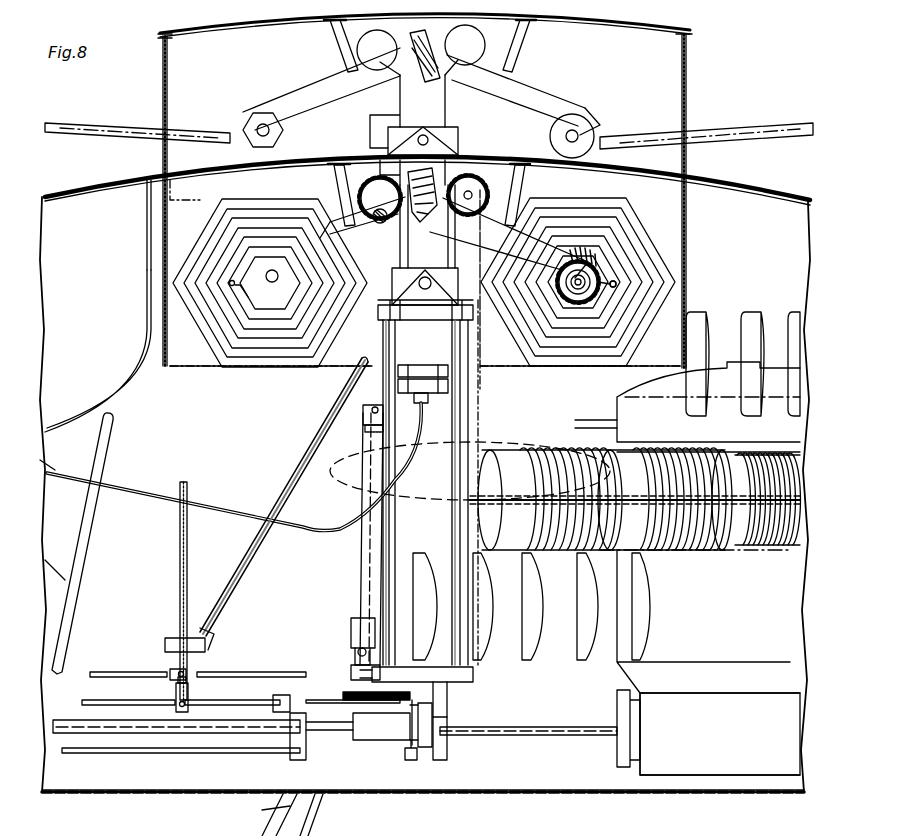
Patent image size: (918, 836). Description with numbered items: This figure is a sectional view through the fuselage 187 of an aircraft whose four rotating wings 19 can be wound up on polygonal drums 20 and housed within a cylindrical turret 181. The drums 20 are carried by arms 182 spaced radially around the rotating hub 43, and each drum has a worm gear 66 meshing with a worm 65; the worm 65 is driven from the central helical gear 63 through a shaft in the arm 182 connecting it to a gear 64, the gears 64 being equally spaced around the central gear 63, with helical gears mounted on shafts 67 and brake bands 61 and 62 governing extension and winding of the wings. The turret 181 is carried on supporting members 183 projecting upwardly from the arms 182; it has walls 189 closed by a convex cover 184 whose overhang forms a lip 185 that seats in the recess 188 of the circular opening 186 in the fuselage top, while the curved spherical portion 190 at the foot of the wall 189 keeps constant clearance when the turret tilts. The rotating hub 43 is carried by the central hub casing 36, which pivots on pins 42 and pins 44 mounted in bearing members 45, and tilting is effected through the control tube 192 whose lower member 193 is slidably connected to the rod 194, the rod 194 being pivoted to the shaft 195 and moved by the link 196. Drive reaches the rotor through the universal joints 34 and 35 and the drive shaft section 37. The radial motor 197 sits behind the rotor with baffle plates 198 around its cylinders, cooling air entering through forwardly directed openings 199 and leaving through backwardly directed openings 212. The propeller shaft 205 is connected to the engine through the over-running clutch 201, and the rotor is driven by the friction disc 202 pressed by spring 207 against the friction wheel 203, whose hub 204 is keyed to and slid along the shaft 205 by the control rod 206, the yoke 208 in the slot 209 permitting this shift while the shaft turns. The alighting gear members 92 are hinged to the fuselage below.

The rotating wing 19 is at (105, 127).
The polygonal drum 20 is at (285, 135).
The universal joint 34 is at (351, 628).
The universal joint 35 is at (372, 426).
The hub casing 36 is at (416, 491).
The drive shaft section 37 is at (362, 551).
The pin 42 is at (489, 482).
The rotating hub 43 is at (442, 227).
The pin 44 is at (412, 227).
The bearing member 45 is at (424, 300).
The brake band 61 is at (448, 378).
The brake band 62 is at (448, 392).
The central helical gear 63 is at (402, 220).
The helical gear 64 is at (422, 189).
The worm 65 is at (600, 255).
The worm gear 66 is at (575, 300).
The shaft 67 is at (620, 283).
The alighting gear member 92 is at (284, 815).
The turret 181 is at (690, 217).
The arm 182 is at (538, 88).
The supporting member 183 is at (516, 40).
The cover 184 is at (652, 30).
The lip 185 is at (688, 37).
The circular opening 186 is at (160, 206).
The fuselage 187 is at (782, 193).
The recess 188 is at (160, 185).
The turret wall 189 is at (686, 92).
The curved portion 190 is at (172, 366).
The control tube 192 is at (300, 466).
The member 193 is at (206, 650).
The rod 194 is at (188, 563).
The shaft 195 is at (208, 698).
The link 196 is at (125, 663).
The radial motor 197 is at (622, 416).
The baffle plate 198 is at (622, 436).
The forwardly directed opening 199 is at (543, 642).
The over-running clutch 201 is at (612, 703).
The friction disc 202 is at (300, 694).
The friction wheel 203 is at (432, 710).
The hub 204 is at (395, 740).
The propeller shaft 205 is at (160, 740).
The control rod 206 is at (200, 752).
The spring 207 is at (410, 705).
The yoke 208 is at (410, 760).
The slot 209 is at (447, 707).
The backwardly directed opening 212 is at (708, 312).